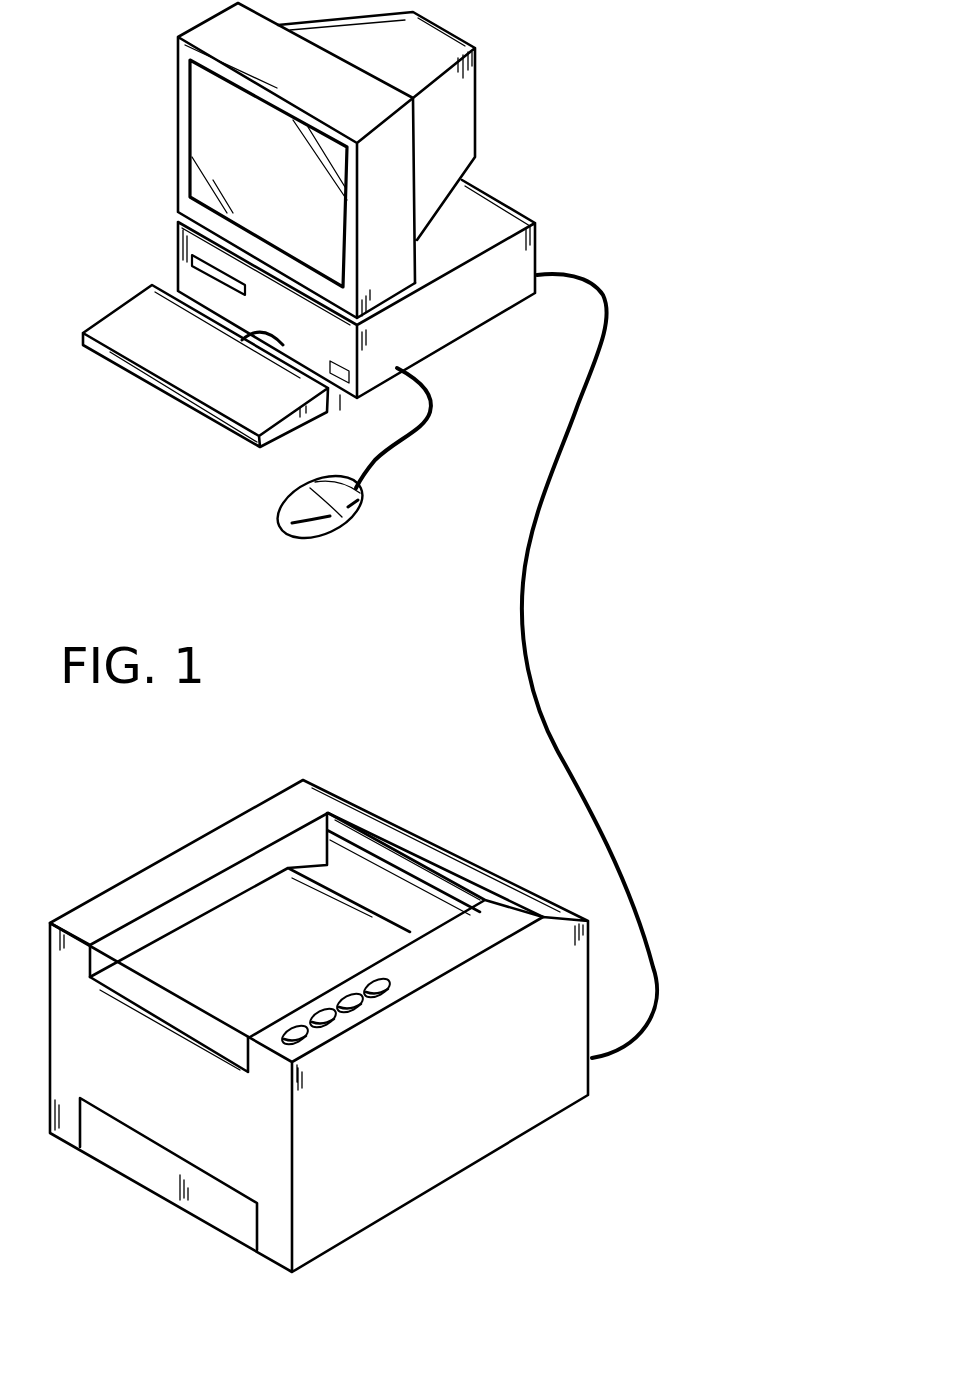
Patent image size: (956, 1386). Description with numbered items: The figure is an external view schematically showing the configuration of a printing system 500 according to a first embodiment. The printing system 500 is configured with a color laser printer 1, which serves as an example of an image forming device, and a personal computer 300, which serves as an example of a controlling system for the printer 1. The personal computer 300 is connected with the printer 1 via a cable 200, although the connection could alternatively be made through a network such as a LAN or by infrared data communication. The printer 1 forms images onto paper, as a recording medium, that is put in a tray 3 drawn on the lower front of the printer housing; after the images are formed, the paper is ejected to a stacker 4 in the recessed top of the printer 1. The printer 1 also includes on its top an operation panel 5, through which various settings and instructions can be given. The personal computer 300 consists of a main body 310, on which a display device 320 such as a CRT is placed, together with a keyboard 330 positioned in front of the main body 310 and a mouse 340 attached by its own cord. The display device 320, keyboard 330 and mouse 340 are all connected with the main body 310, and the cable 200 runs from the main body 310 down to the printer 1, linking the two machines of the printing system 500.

The color laser printer 1 is at (572, 1140).
The tray 3 is at (123, 1158).
The stacker 4 is at (410, 923).
The operation panel 5 is at (308, 984).
The cable 200 is at (525, 587).
The personal computer 300 is at (525, 118).
The main body 310 is at (457, 323).
The display device 320 is at (187, 97).
The keyboard 330 is at (182, 393).
The mouse 340 is at (313, 513).
The printing system 500 is at (692, 220).